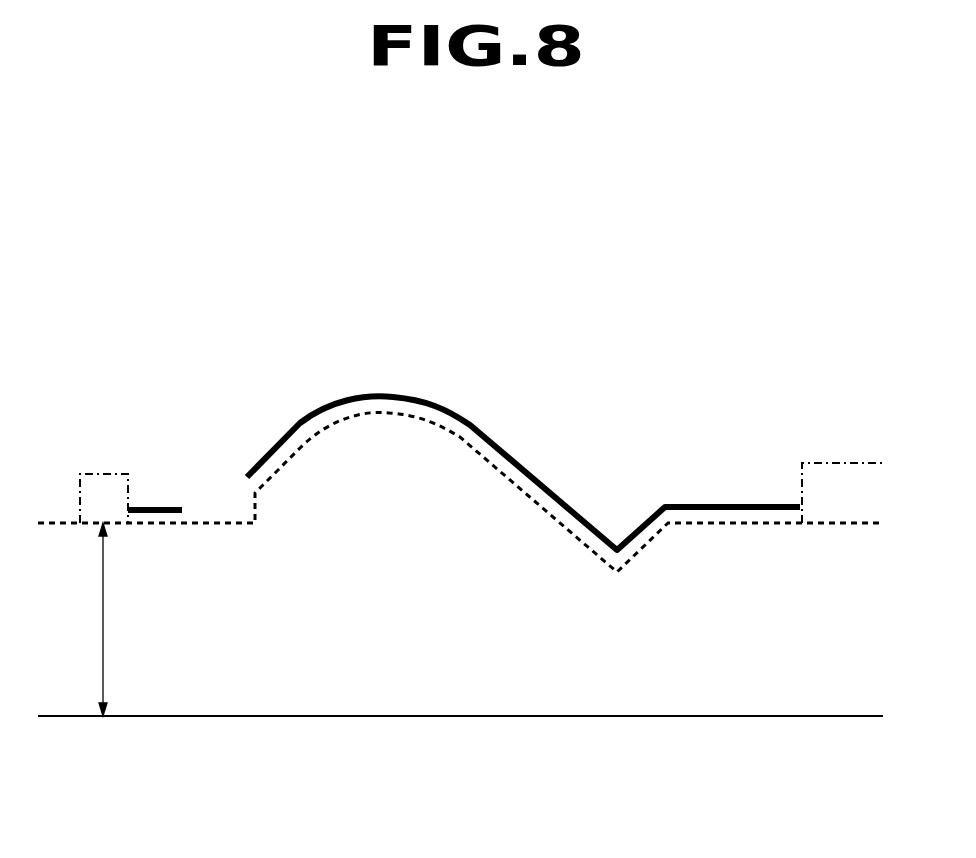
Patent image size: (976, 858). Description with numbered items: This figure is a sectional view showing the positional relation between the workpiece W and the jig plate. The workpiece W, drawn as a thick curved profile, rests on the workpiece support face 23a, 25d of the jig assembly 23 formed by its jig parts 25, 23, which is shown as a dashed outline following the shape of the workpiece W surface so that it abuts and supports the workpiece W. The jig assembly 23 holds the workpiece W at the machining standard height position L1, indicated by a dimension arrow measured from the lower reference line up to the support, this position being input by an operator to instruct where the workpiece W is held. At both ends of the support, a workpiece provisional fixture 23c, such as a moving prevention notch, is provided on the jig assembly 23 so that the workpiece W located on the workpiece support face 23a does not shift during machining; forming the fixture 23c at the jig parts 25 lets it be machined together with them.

The workpiece W is at (523, 442).
The workpiece support face 23a is at (523, 473).
The pad forming surface 25d is at (527, 483).
The jig parts 25 is at (460, 530).
The jig assembly 23 is at (543, 505).
The workpiece provisional fixture 23c is at (92, 474).
The machining standard height position L1 is at (460, 619).